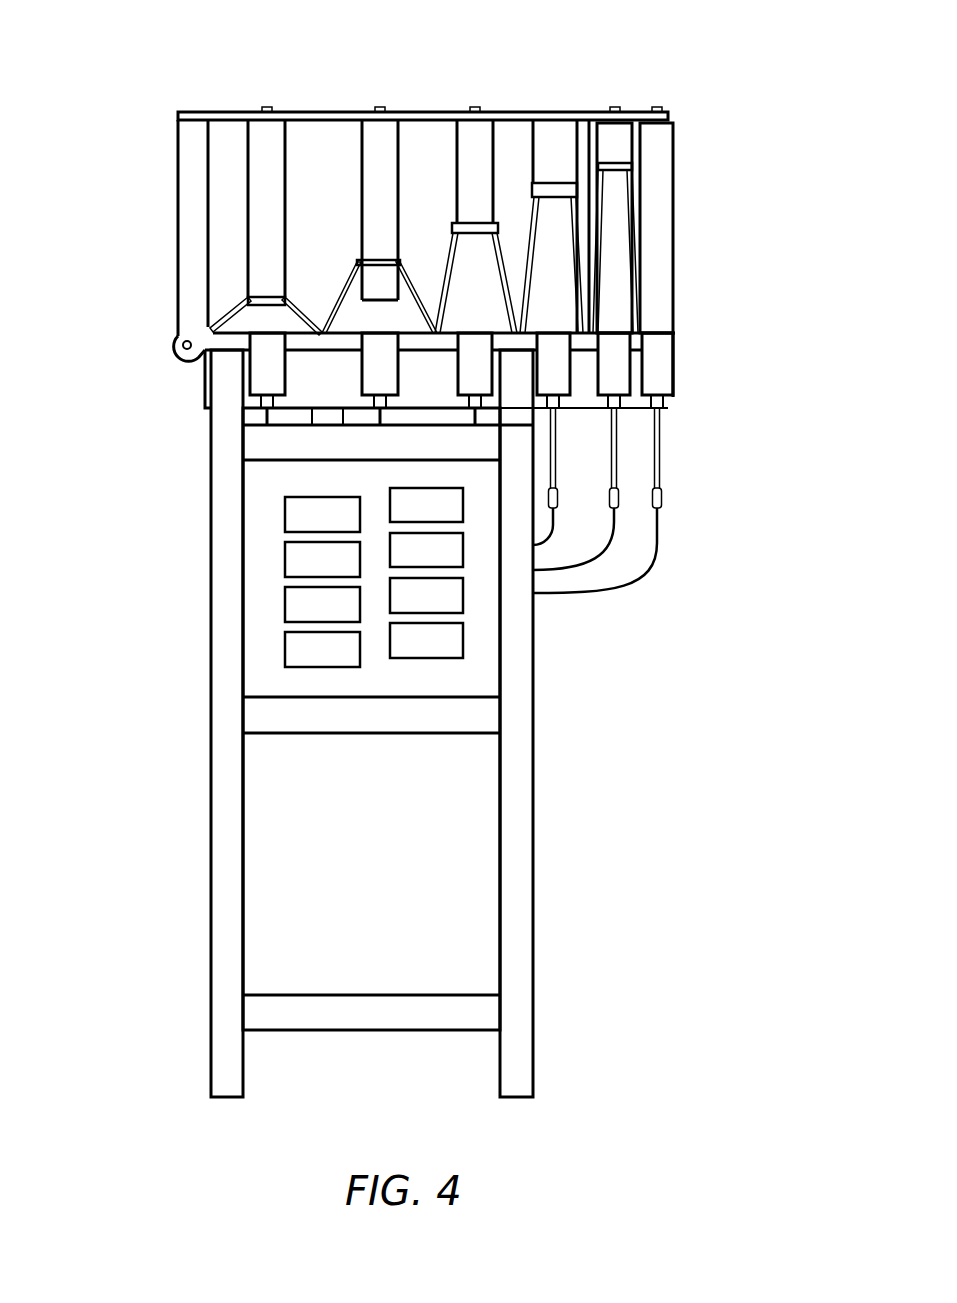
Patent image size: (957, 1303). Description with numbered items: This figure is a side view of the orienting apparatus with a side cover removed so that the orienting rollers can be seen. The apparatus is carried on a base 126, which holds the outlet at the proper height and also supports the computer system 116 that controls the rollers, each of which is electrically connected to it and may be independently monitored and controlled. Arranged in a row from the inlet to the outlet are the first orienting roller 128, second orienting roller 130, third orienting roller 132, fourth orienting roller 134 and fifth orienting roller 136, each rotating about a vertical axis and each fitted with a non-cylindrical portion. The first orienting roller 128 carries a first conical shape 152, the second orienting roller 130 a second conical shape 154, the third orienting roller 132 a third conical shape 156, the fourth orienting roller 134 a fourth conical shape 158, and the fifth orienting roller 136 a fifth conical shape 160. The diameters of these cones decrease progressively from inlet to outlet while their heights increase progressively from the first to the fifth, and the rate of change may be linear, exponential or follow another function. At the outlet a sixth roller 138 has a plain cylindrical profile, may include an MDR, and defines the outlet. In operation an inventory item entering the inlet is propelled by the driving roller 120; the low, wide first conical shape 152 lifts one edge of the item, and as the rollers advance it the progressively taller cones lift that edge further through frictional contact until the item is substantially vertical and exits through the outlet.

The computer system 116 is at (250, 612).
The driving roller 120 is at (171, 349).
The base 126 is at (520, 777).
The first orienting roller 128 is at (268, 138).
The second orienting roller 130 is at (382, 138).
The third orienting roller 132 is at (473, 138).
The fourth orienting roller 134 is at (553, 135).
The fifth orienting roller 136 is at (622, 135).
The sixth roller 138 is at (658, 287).
The first conical shape 152 is at (243, 320).
The second conical shape 154 is at (378, 285).
The third conical shape 156 is at (492, 318).
The fourth conical shape 158 is at (562, 300).
The fifth conical shape 160 is at (620, 233).